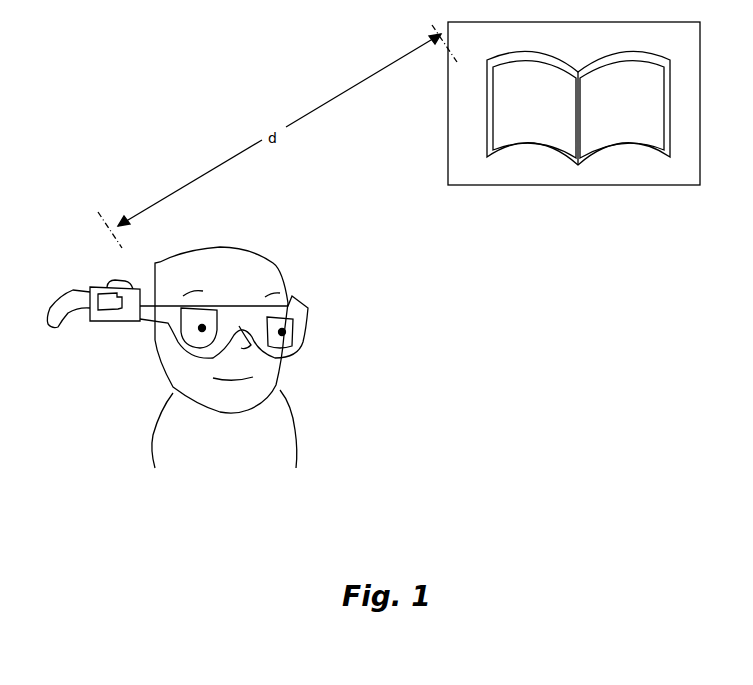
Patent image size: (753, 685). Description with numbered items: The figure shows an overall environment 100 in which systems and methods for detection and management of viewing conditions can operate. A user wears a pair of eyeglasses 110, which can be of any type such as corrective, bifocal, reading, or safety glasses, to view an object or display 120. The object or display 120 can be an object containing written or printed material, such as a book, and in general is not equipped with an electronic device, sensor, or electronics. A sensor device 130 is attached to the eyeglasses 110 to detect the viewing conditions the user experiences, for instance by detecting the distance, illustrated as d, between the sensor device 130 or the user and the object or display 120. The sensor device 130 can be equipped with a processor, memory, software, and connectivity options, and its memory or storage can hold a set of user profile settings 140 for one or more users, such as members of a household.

The overall environment 100 is at (513, 467).
The pair of eyeglasses 110 is at (307, 325).
The object or display 120 is at (552, 185).
The sensor device 130 is at (120, 322).
The set of user profile settings 140 is at (103, 289).